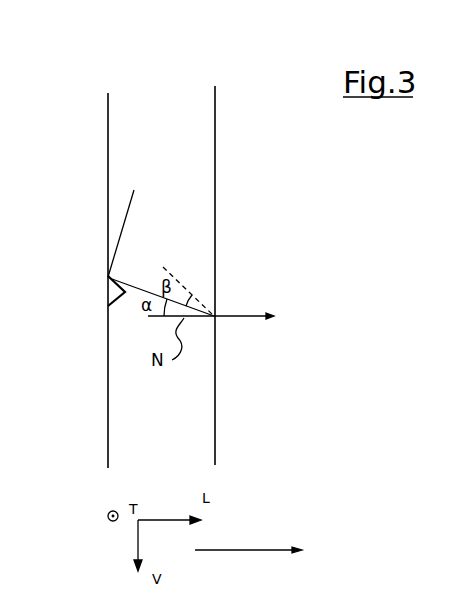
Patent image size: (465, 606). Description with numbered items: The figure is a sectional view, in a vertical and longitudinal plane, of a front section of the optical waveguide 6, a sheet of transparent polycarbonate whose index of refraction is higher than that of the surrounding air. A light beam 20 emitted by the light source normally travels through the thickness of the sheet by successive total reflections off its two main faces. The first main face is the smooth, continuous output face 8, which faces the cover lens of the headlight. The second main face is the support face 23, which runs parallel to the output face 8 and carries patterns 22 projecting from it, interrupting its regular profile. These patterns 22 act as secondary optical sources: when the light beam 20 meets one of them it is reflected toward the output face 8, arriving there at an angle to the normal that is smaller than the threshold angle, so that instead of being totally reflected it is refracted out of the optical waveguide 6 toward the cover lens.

The optical waveguide 6 is at (170, 102).
The output face 8 is at (215, 390).
The light beam 20 is at (127, 224).
The patterns 22 is at (104, 295).
The support face 23 is at (107, 130).